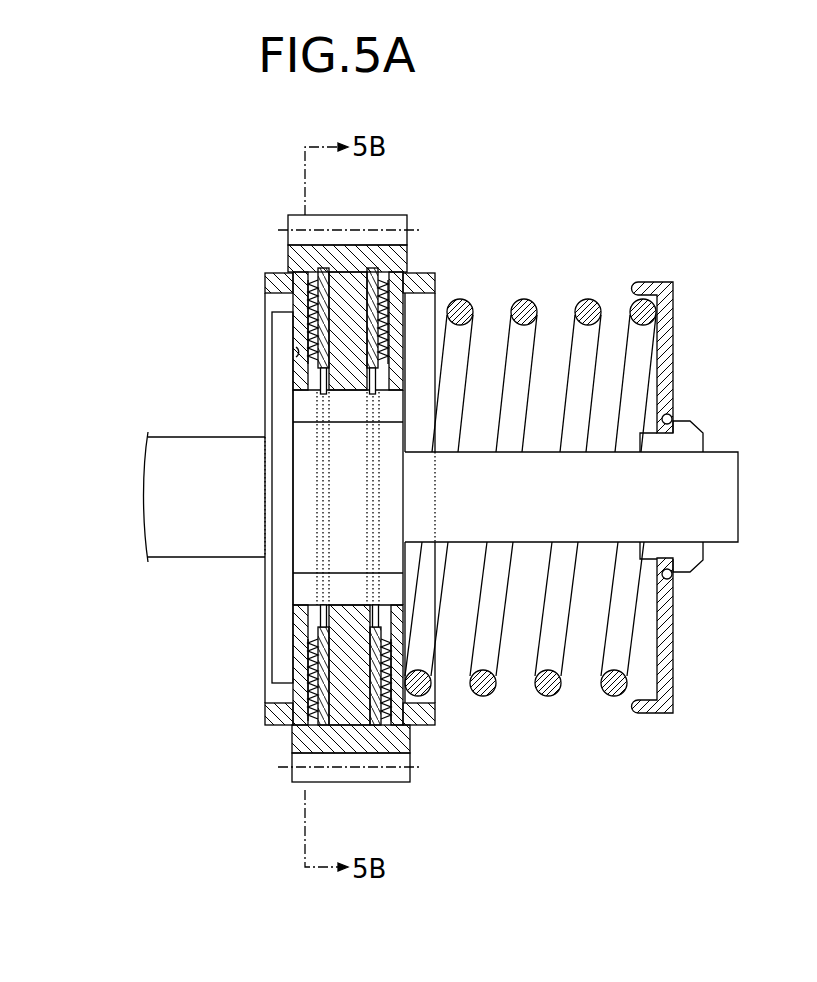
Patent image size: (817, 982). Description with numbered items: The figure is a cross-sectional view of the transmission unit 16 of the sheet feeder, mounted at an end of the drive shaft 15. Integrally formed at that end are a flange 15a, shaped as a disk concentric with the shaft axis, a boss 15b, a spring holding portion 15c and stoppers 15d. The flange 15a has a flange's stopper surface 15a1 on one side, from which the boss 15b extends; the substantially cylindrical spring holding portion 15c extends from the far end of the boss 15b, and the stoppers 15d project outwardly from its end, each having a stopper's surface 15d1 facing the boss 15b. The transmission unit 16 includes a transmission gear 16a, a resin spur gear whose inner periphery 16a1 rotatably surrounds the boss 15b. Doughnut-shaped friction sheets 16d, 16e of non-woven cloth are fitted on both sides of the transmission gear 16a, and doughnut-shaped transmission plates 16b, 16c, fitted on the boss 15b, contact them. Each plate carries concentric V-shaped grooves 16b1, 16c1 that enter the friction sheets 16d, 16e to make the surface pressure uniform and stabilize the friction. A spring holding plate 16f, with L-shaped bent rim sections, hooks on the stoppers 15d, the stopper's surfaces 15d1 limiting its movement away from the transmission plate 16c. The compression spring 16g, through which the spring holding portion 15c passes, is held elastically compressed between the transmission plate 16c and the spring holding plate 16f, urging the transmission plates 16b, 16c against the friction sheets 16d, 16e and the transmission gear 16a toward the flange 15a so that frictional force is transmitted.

The drive shaft 15 is at (160, 424).
The flange 15a is at (280, 650).
The flange's stopper surface 15a1 is at (300, 352).
The boss 15b is at (303, 553).
The spring holding portion 15c is at (590, 497).
The stopper 15d is at (700, 438).
The stopper's surface 15d1 is at (672, 415).
The transmission unit 16 is at (596, 208).
The transmission gear 16a is at (405, 255).
The inner periphery 16a1 is at (348, 392).
The transmission plate 16b is at (268, 284).
The V-shaped grooves 16b1 is at (300, 283).
The transmission plate 16c is at (425, 282).
The V-shaped grooves 16c1 is at (397, 285).
The friction sheet 16d is at (321, 270).
The friction sheet 16e is at (378, 270).
The spring holding plate 16f is at (665, 316).
The compression spring 16g is at (575, 330).